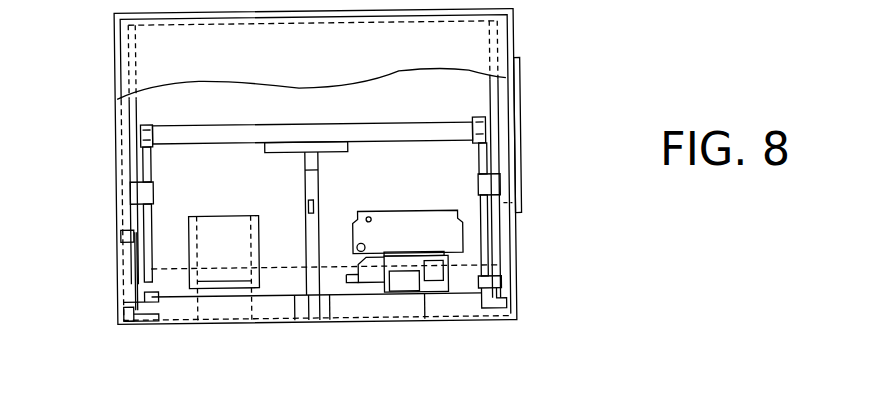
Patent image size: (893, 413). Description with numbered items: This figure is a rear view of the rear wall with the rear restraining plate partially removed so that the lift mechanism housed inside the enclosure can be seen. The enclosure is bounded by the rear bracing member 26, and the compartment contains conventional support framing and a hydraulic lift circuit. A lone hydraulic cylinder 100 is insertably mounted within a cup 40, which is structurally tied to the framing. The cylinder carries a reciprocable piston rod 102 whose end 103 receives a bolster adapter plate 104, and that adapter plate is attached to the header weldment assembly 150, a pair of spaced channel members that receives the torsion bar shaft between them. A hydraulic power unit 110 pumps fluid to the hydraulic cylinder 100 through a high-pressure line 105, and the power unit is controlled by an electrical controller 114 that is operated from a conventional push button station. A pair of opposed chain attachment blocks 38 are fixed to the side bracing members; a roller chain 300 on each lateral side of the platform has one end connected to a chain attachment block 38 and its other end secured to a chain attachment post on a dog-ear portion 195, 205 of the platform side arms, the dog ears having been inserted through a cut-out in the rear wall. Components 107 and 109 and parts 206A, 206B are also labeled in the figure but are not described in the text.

The rear bracing member 26 is at (227, 63).
The chain attachment block 38 is at (151, 192).
The cup 40 is at (293, 303).
The hydraulic cylinder 100 is at (305, 247).
The reciprocable piston rod 102 is at (307, 160).
The piston rod end 103 is at (320, 155).
The bolster adapter plate 104 is at (348, 142).
The high-pressure line 105 is at (333, 296).
The circuit panel 107 is at (432, 242).
The connector lead 109 is at (352, 248).
The hydraulic power unit 110 is at (373, 277).
The electrical controller 114 is at (246, 254).
The header weldment assembly 150 is at (258, 114).
The dog-ear portion 195 is at (505, 242).
The dog-ear portion 205 is at (130, 262).
The left post upper 206A is at (115, 218).
The left post foot 206B is at (127, 322).
The roller chain 300 is at (485, 140).